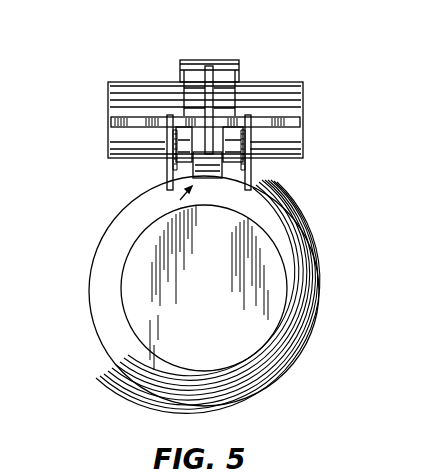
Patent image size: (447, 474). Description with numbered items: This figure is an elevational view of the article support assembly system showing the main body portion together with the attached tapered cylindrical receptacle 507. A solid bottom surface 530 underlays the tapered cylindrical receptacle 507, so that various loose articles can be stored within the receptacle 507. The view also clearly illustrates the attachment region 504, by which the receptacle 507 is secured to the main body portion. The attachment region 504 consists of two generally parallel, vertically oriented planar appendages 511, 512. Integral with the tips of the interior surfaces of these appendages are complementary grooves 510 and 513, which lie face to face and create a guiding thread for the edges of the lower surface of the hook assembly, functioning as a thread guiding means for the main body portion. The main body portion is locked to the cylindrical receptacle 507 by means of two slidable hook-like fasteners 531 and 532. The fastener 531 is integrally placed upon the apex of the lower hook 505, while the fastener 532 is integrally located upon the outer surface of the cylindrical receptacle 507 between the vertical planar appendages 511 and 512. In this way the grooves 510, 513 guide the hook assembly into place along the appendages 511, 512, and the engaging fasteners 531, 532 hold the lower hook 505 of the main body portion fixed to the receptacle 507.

The attachment region 504 is at (297, 160).
The lower hook 505 is at (232, 112).
The tapered cylindrical receptacle 507 is at (295, 320).
The groove 510 is at (160, 125).
The vertical planar appendage 511 is at (165, 172).
The vertical planar appendage 512 is at (253, 180).
The groove 513 is at (248, 140).
The solid bottom surface 530 is at (143, 300).
The hook-like fastener 531 is at (250, 165).
The hook-like fastener 532 is at (178, 190).